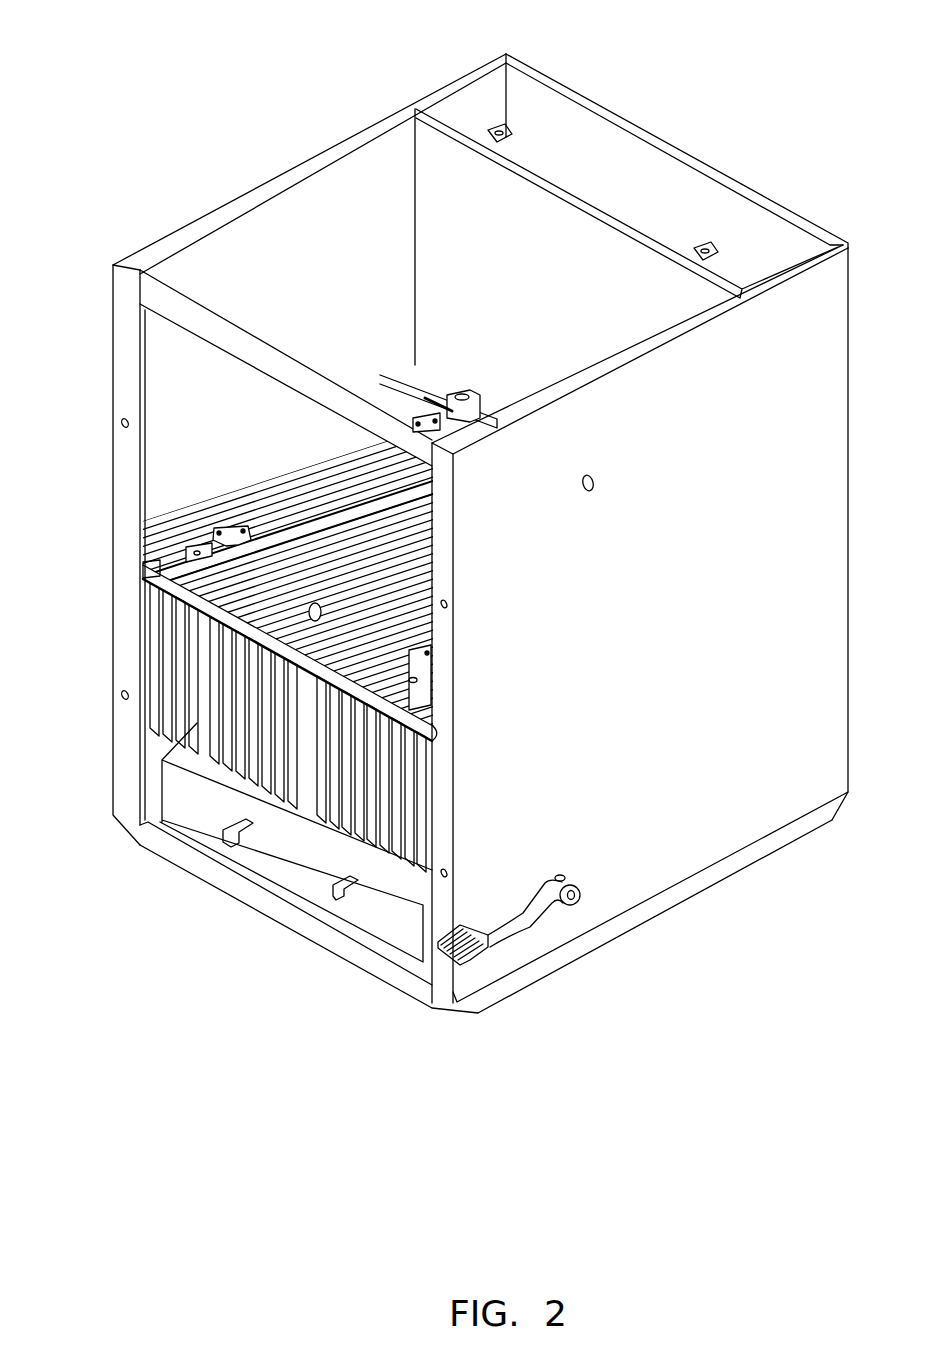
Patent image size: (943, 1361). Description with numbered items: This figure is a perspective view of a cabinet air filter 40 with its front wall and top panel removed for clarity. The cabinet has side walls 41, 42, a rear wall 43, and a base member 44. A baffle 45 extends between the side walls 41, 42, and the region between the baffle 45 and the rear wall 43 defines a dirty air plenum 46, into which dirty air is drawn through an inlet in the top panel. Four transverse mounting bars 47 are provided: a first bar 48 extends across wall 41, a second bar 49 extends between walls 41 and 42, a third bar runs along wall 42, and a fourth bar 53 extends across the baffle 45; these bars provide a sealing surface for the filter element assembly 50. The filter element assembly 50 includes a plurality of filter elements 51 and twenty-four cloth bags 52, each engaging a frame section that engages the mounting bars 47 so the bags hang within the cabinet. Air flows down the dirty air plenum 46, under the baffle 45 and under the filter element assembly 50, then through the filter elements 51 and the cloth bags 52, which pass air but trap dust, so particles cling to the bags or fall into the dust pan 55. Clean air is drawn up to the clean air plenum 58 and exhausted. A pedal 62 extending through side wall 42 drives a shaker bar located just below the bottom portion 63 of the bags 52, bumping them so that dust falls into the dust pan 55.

The cabinet air filter 40 is at (175, 150).
The side wall 41 is at (313, 292).
The side wall 42 is at (643, 668).
The rear wall 43 is at (710, 220).
The base member 44 is at (412, 970).
The baffle 45 is at (502, 297).
The dirty air plenum 46 is at (563, 138).
The transverse mounting bars 47 is at (467, 397).
The first bar 48 is at (270, 463).
The second bar 49 is at (413, 717).
The filter element assembly 50 is at (248, 798).
The filter elements 51 is at (305, 822).
The cloth bags 52 is at (197, 703).
The fourth bar 53 is at (442, 395).
The dust pan 55 is at (380, 955).
The clean air plenum 58 is at (218, 262).
The pedal 62 is at (478, 953).
The bottom portion 63 is at (403, 877).